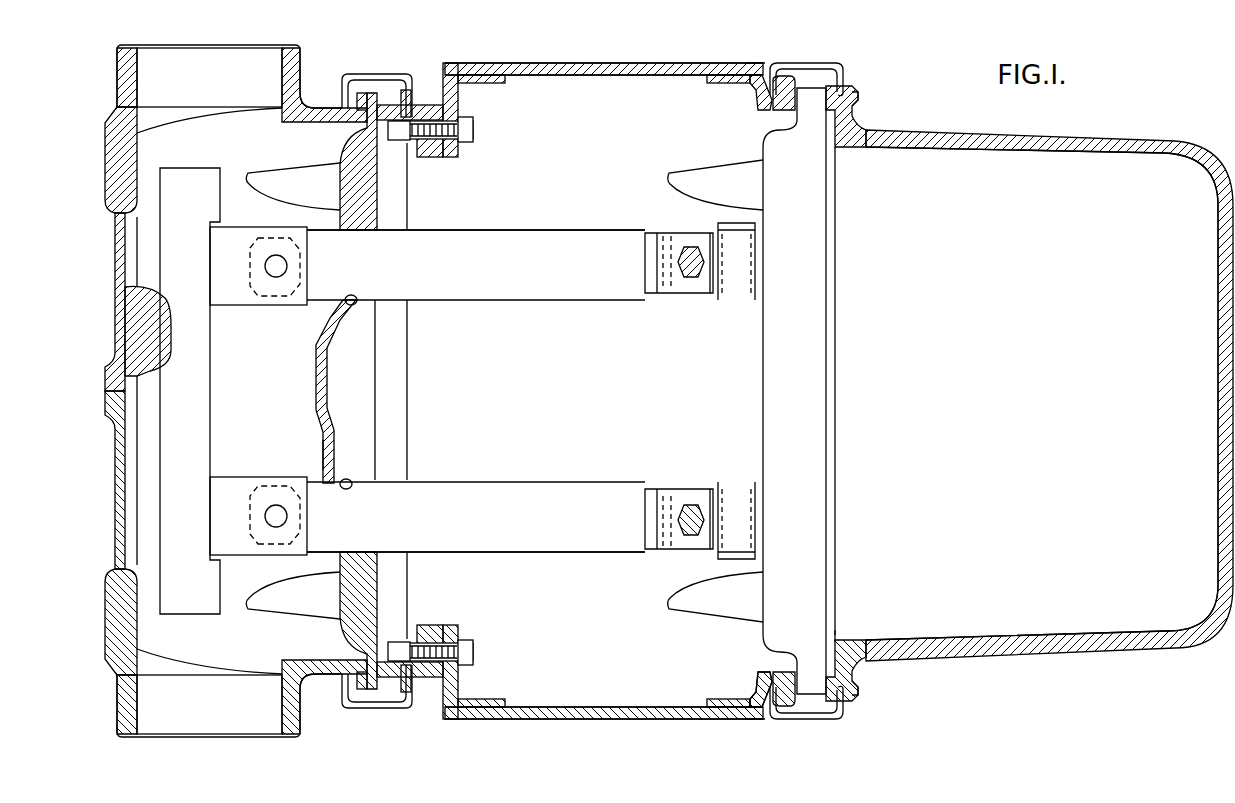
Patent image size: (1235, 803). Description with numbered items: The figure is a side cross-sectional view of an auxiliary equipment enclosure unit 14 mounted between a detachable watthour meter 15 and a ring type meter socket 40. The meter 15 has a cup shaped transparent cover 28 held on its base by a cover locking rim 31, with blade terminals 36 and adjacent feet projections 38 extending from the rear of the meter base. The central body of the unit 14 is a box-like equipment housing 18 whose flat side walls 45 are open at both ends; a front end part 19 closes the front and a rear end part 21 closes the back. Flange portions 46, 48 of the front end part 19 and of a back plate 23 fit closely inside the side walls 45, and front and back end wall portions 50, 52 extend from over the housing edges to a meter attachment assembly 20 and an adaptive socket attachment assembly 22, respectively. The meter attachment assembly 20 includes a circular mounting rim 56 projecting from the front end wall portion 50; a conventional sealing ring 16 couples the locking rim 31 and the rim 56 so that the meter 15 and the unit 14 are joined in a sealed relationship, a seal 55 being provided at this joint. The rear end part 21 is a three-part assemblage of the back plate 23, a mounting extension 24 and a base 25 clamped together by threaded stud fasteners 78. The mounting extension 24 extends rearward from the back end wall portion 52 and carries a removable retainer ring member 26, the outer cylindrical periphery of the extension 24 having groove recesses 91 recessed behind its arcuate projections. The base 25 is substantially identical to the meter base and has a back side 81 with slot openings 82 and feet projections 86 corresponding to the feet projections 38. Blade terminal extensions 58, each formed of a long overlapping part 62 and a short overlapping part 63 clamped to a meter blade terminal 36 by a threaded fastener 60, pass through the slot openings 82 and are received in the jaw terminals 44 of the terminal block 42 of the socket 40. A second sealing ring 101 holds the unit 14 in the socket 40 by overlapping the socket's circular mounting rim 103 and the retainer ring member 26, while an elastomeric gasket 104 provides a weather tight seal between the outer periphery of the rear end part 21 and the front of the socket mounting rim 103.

The auxiliary equipment enclosure unit 14 is at (612, 49).
The detachable watthour meter 15 is at (1040, 344).
The sealing ring 16 is at (846, 63).
The equipment housing 18 is at (679, 61).
The front end part 19 is at (756, 61).
The meter attachment assembly 20 is at (805, 62).
The rear end part 21 is at (409, 213).
The adaptive socket attachment assembly 22 is at (403, 90).
The back plate 23 is at (474, 131).
The mounting extension 24 is at (428, 105).
The base 25 is at (320, 331).
The retainer ring member 26 is at (415, 100).
The cup shaped transparent cover 28 is at (1127, 130).
The cover locking rim 31 is at (847, 72).
The blade terminals 36 is at (668, 292).
The feet projections 38 is at (707, 172).
The ring type meter socket 40 is at (303, 63).
The terminal block 42 is at (171, 452).
The jaw terminals 44 is at (233, 285).
The side walls 45 is at (588, 76).
The flange portion 46 is at (742, 84).
The flange portion 48 is at (505, 84).
The front end wall portion 50 is at (764, 718).
The back end wall portion 52 is at (460, 96).
The seal 55 is at (771, 80).
The circular mounting rim 56 is at (784, 104).
The blade terminal extensions 58 is at (585, 299).
The threaded fasteners 60 is at (693, 246).
The long overlapping part 62 is at (531, 272).
The short overlapping part 63 is at (738, 282).
The threaded stud fasteners 78 is at (470, 140).
The back side 81 is at (333, 446).
The slot openings 82 is at (355, 305).
The feet projections 86 is at (300, 176).
The groove recesses 91 is at (400, 690).
The sealing ring 101 is at (366, 75).
The circular mounting rim 103 is at (356, 98).
The elastomeric gasket 104 is at (367, 664).